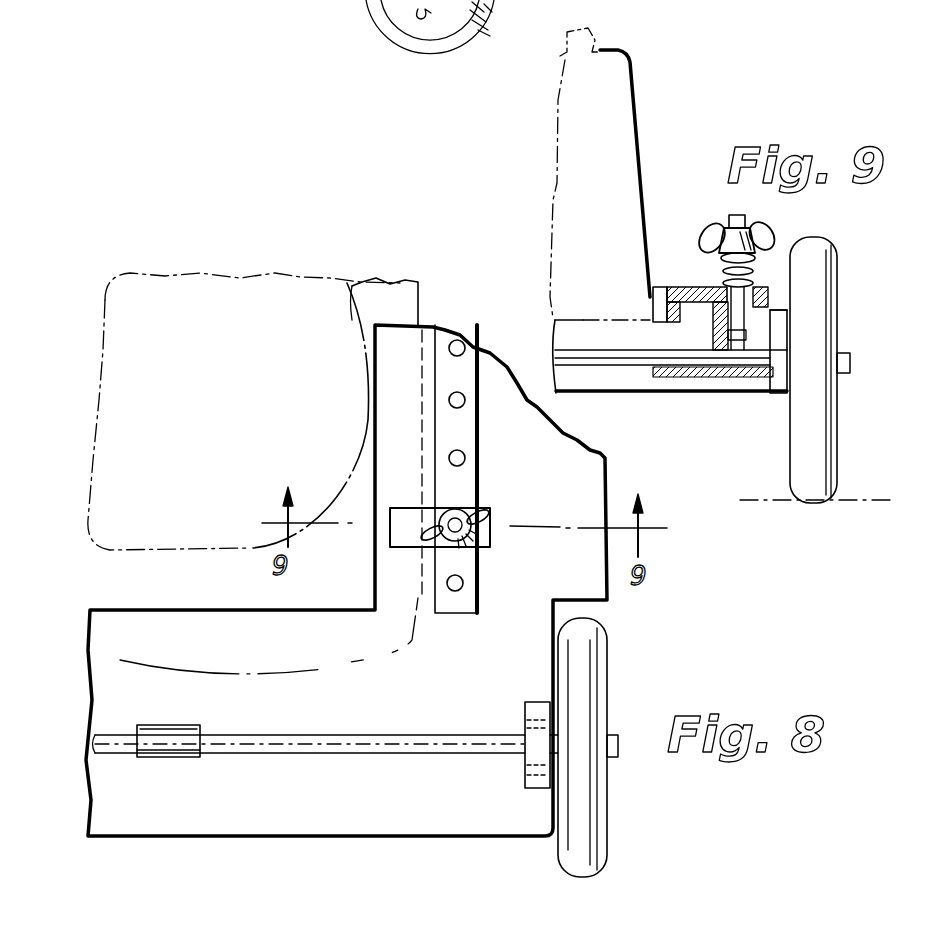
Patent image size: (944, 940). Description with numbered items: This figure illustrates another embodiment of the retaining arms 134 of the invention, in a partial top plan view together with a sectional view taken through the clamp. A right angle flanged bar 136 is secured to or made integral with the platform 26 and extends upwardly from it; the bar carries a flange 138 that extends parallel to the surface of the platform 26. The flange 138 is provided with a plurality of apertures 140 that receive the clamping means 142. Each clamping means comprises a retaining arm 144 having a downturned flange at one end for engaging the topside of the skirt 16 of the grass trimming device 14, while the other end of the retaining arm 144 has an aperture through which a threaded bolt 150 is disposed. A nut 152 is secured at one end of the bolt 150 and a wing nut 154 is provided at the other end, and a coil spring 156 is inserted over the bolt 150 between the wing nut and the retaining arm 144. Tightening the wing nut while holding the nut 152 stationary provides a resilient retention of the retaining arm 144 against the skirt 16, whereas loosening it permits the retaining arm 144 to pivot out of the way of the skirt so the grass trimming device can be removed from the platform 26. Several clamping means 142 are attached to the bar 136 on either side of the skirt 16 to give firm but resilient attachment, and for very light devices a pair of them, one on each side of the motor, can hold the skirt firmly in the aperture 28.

In FIG. 8, the grass trimming device 14 is at (258, 292).
In FIG. 9, the grass trimming device 14 is at (642, 116).
In FIG. 8, the skirt 16 is at (392, 276).
In FIG. 9, the skirt 16 is at (565, 293).
In FIG. 8, the platform 26 is at (590, 468).
In FIG. 8, the aperture 28 is at (348, 592).
In FIG. 8, the retaining arms 134 is at (444, 506).
In FIG. 9, the retaining arms 134 is at (778, 229).
In FIG. 8, the right angle flanged bar 136 is at (466, 354).
In FIG. 9, the right angle flanged bar 136 is at (722, 293).
In FIG. 8, the flange 138 is at (460, 428).
In FIG. 9, the flange 138 is at (798, 298).
In FIG. 8, the apertures 140 is at (460, 585).
In FIG. 9, the apertures 140 is at (770, 310).
In FIG. 8, the clamping means 142 is at (487, 533).
In FIG. 9, the clamping means 142 is at (727, 232).
In FIG. 8, the retaining arm 144 is at (393, 523).
In FIG. 9, the retaining arm 144 is at (668, 281).
In FIG. 9, the threaded bolt 150 is at (738, 212).
In FIG. 9, the nut 152 is at (757, 335).
In FIG. 8, the wing nut 154 is at (430, 505).
In FIG. 9, the wing nut 154 is at (767, 230).
In FIG. 9, the coil spring 156 is at (720, 268).